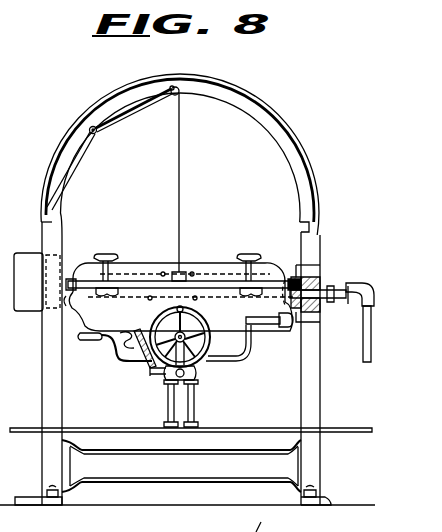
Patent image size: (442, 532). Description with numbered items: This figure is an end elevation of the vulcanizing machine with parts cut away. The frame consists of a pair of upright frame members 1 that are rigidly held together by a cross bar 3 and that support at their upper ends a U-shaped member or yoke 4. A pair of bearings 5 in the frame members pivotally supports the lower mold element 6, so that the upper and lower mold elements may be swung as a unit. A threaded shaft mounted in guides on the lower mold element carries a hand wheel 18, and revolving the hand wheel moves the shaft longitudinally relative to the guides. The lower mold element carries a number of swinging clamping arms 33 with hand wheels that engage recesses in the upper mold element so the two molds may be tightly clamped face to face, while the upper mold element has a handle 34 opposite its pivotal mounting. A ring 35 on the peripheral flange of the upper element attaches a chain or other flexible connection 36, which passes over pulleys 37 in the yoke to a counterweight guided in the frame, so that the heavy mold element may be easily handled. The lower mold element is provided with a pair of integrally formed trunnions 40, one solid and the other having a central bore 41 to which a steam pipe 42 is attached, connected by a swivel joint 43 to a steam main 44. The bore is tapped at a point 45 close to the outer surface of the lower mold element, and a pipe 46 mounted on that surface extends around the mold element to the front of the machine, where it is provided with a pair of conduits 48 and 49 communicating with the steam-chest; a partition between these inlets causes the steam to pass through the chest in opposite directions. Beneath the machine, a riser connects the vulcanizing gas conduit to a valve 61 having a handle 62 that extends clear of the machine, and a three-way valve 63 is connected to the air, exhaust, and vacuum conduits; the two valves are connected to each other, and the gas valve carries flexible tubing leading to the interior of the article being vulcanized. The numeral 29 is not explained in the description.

The upright frame member 1 is at (48, 388).
The cross bar 3 is at (172, 472).
The U-shaped member or yoke 4 is at (283, 142).
The bearing 5 is at (317, 282).
The lower mold element 6 is at (88, 326).
The hand wheel 18 is at (142, 370).
The base 29 is at (156, 526).
The swinging clamping arms 33 is at (108, 257).
The handle 34 is at (190, 280).
The ring 35 is at (168, 270).
The chain or flexible connection 36 is at (181, 187).
The pulleys 37 is at (171, 96).
The trunnions 40 is at (32, 300).
The central bore 41 is at (335, 290).
The steam pipe 42 is at (332, 302).
The swivel joint 43 is at (373, 291).
The steam main 44 is at (371, 330).
The tap 45 is at (292, 276).
The pipe 46 is at (262, 325).
The conduit 48 is at (165, 298).
The conduit 49 is at (218, 314).
The valve 61 is at (160, 374).
The handle 62 is at (115, 363).
The three-way valve 63 is at (203, 374).